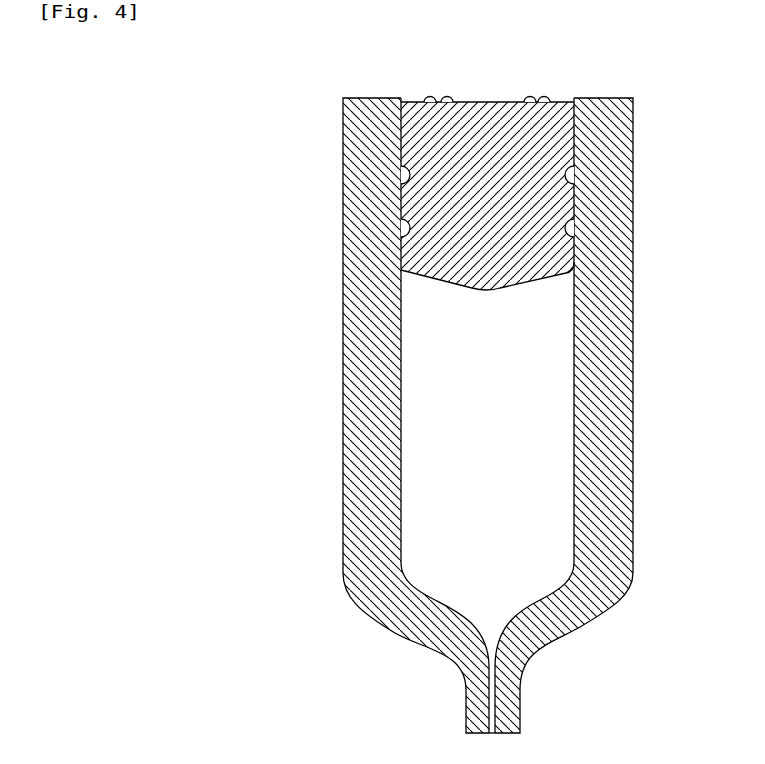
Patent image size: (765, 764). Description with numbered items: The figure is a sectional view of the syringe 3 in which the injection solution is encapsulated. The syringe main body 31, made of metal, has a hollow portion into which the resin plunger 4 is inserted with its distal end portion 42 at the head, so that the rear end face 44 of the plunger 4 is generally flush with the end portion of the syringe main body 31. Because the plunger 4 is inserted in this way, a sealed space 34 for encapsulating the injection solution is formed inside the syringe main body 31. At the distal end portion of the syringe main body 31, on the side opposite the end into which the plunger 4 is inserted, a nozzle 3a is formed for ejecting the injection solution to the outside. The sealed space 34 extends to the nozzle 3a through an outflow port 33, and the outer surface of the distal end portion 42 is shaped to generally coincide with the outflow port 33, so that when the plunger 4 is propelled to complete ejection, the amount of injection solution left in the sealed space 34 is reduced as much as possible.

The syringe 3 is at (438, 394).
The nozzle 3a is at (493, 733).
The plunger 4 is at (543, 173).
The syringe main body 31 is at (632, 380).
The outflow port 33 is at (422, 593).
The sealed space 34 is at (525, 525).
The distal end portion 42 is at (533, 280).
The rear end face 44 is at (507, 98).